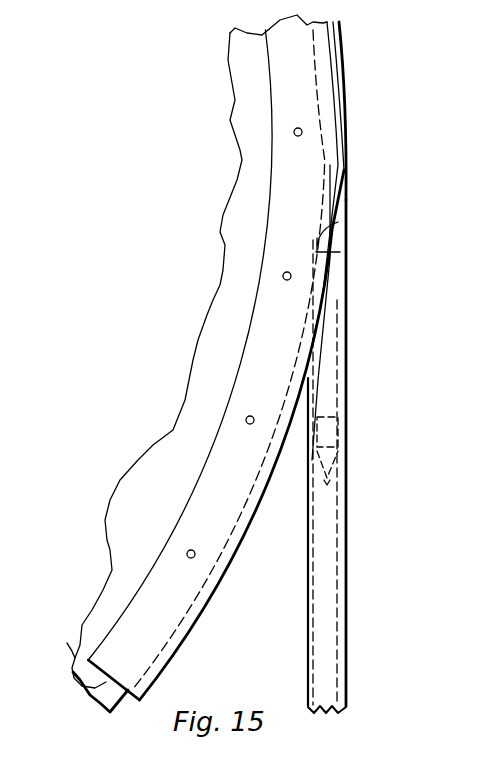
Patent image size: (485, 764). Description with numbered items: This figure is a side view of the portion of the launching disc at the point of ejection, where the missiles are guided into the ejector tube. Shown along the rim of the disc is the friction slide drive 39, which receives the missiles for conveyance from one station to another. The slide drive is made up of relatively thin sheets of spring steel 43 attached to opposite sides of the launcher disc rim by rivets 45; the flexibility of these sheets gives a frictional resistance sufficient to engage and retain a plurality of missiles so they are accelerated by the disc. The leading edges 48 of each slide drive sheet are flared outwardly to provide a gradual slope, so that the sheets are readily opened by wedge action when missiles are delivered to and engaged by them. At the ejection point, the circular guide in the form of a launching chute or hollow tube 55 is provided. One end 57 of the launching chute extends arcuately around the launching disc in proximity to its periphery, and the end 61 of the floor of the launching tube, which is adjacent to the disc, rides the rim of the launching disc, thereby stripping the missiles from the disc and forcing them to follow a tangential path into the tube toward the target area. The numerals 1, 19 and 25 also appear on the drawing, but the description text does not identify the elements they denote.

The fastener 1 is at (330, 433).
The section line 19 is at (297, 188).
The sheet 25 is at (170, 370).
The friction slide drive 39 is at (212, 580).
The sheets of spring steel 43 is at (268, 77).
The rivets 45 is at (294, 132).
The leading edges 48 is at (78, 658).
The launching chute 55 is at (330, 578).
The end of the launching chute 57 is at (342, 54).
The end of the floor of the launching tube 61 is at (352, 218).